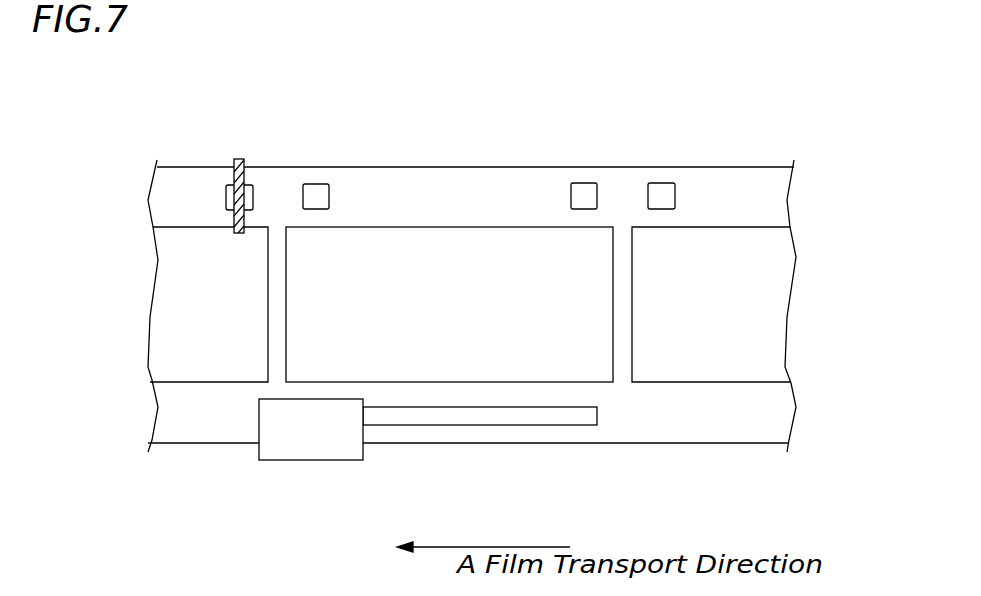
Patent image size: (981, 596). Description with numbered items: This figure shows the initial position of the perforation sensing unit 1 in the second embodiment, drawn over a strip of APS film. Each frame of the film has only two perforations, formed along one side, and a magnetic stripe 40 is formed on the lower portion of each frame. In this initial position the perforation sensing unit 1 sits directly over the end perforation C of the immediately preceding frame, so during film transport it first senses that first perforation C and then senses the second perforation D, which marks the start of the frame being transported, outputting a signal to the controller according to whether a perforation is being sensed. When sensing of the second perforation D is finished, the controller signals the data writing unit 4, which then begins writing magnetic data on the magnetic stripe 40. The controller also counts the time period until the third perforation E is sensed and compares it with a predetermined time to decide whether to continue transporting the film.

The perforation sensing unit 1 is at (240, 158).
The data writing unit 4 is at (318, 452).
The magnetic stripe 40 is at (552, 420).
The end perforation C is at (227, 183).
The second perforation D is at (313, 183).
The third perforation E is at (583, 183).